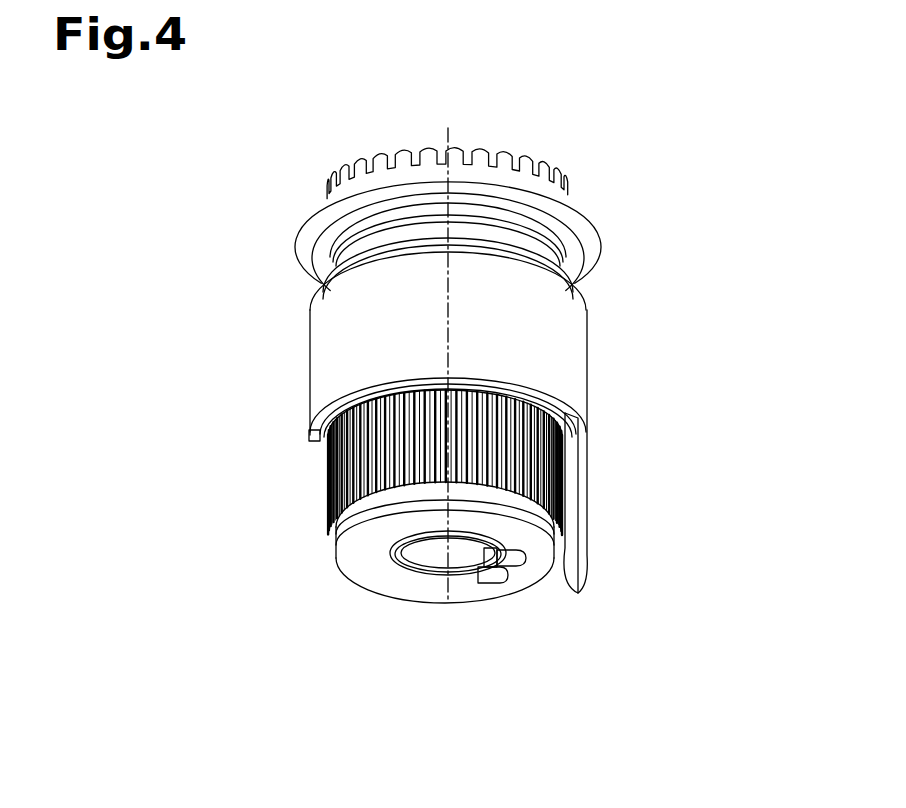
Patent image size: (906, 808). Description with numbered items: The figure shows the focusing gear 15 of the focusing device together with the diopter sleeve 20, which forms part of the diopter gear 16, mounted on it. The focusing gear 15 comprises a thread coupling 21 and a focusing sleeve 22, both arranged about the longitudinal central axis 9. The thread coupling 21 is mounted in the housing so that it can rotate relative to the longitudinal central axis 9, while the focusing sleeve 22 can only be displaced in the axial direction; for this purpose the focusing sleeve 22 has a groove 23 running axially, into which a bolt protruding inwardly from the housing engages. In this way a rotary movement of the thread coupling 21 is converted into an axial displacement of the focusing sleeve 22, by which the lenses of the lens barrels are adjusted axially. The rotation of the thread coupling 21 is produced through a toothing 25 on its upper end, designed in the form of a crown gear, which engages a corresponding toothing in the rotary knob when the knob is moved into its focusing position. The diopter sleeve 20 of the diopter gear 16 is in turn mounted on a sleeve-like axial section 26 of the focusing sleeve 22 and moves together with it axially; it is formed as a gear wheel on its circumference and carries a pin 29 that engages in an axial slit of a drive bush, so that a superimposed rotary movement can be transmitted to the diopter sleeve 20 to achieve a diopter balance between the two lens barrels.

The longitudinal central axis 9 is at (445, 139).
The focusing gear 15 is at (484, 316).
The diopter gear 16 is at (353, 535).
The diopter sleeve 20 is at (322, 535).
The thread coupling 21 is at (611, 247).
The focusing sleeve 22 is at (605, 365).
The groove 23 is at (313, 452).
The toothing 25 is at (538, 162).
The sleeve-like axial section 26 is at (427, 563).
The pin 29 is at (455, 560).